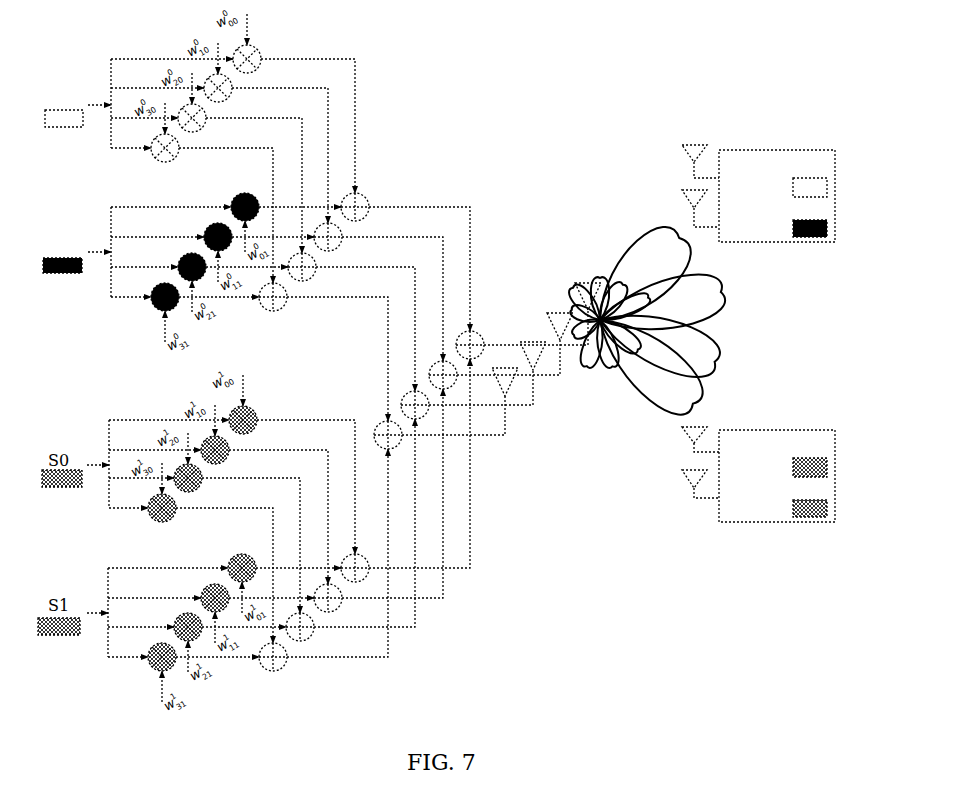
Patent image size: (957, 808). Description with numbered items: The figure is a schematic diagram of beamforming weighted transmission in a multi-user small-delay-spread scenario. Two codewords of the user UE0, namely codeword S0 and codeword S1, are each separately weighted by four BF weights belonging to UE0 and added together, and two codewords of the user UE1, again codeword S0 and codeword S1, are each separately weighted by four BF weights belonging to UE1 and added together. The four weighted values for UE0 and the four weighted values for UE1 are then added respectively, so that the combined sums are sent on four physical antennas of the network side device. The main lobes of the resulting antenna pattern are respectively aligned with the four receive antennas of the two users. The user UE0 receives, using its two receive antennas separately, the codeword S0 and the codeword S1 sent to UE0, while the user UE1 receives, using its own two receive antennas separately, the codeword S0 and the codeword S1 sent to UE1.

The codeword S0 is at (78, 106).
The codeword S1 is at (77, 253).
The user UE0 is at (758, 193).
The user UE1 is at (758, 474).